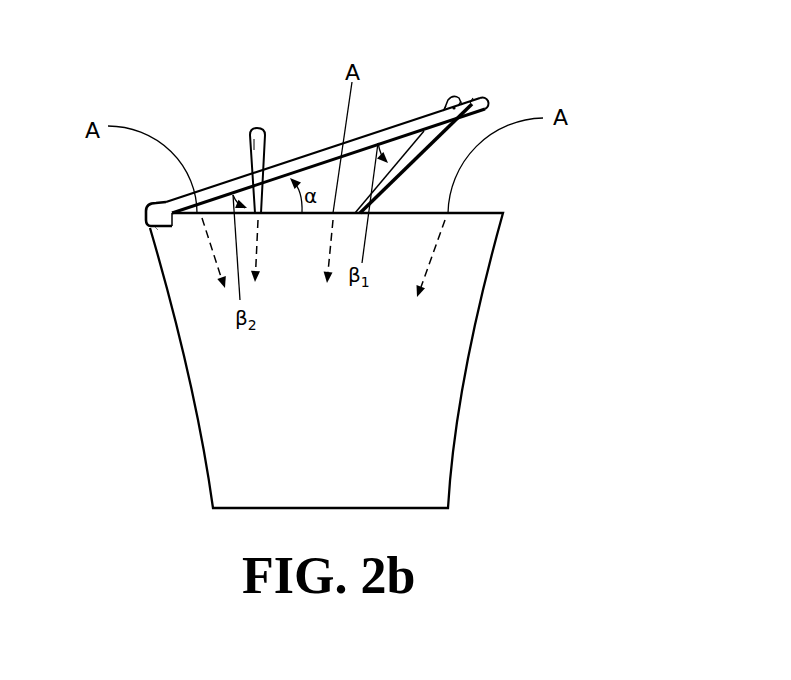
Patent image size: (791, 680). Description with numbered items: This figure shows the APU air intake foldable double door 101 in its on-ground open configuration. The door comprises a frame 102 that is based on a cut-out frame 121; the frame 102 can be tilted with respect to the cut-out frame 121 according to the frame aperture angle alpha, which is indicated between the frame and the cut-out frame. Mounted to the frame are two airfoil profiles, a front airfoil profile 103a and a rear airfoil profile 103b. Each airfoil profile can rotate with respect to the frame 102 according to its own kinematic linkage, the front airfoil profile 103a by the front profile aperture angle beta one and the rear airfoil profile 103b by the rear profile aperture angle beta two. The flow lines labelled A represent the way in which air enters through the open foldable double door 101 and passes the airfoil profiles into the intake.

The foldable double door 101 is at (196, 121).
The frame 102 is at (480, 95).
The front airfoil profile 103a is at (428, 128).
The rear airfoil profile 103b is at (257, 127).
The cut-out frame 121 is at (482, 212).